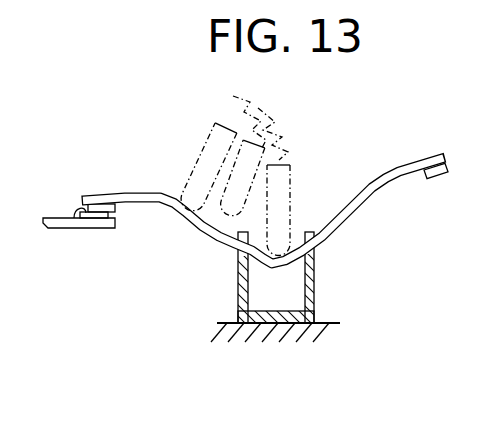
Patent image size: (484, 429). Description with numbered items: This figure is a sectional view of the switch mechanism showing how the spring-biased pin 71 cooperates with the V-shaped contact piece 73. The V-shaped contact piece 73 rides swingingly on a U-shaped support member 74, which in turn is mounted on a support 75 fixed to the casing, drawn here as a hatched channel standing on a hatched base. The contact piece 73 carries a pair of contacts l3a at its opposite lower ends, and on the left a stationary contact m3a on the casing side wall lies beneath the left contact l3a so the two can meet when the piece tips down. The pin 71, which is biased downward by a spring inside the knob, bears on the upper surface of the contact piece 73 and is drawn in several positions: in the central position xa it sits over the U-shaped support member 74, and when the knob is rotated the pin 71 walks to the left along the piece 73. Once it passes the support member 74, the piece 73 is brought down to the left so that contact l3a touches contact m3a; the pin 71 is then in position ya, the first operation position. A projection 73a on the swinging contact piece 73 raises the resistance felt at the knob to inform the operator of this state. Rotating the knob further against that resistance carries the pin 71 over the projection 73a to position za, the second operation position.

The pin 71 is at (205, 156).
The V-shaped contact piece 73 is at (147, 194).
The projection 73a is at (337, 210).
The U-shaped support member 74 is at (238, 303).
The support 75 is at (326, 333).
The position za is at (214, 129).
The position ya is at (266, 148).
The position x_a xa is at (282, 188).
The stationary contact m3a is at (74, 218).
The contacts l3a is at (449, 183).